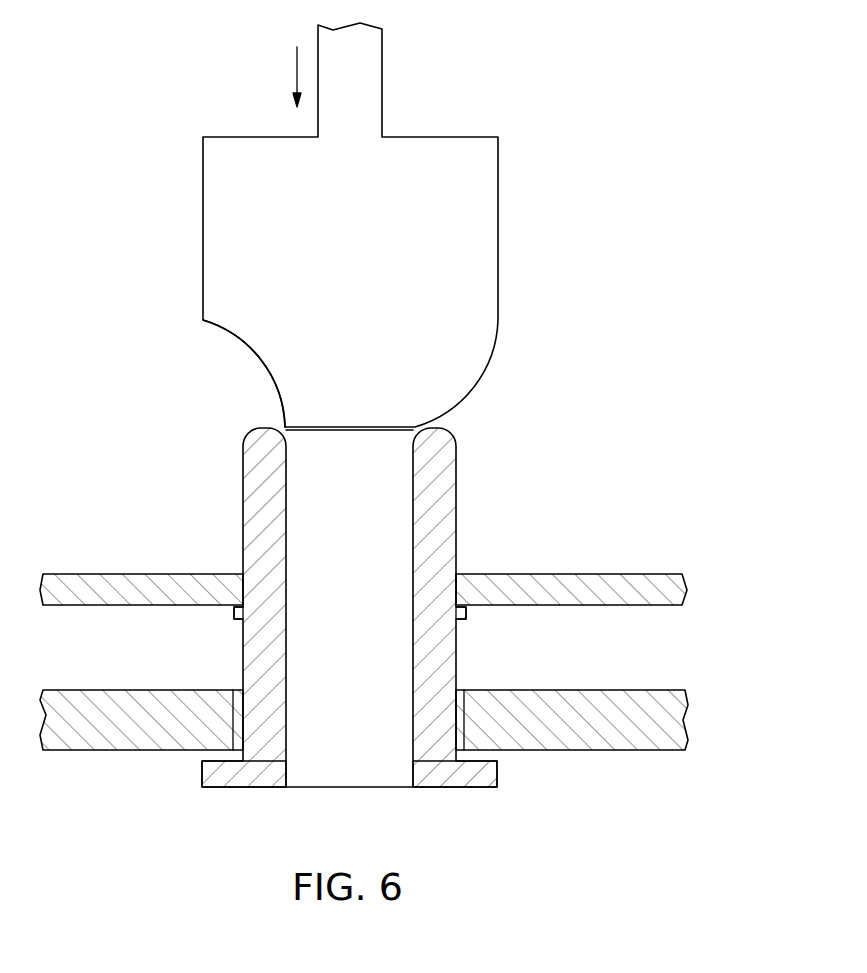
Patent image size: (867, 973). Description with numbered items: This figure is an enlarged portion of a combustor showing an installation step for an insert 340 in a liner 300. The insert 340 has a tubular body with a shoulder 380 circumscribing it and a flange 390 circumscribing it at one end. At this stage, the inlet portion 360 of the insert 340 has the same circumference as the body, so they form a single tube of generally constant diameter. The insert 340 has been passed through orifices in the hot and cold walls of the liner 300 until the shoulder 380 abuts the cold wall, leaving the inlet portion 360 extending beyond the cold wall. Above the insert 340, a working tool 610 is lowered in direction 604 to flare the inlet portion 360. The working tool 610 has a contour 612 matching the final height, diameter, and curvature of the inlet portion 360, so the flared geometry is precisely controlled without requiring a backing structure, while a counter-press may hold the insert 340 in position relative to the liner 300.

The direction 604 is at (297, 72).
The working tool 610 is at (498, 218).
The contour 612 is at (232, 332).
The insert 340 is at (498, 475).
The inlet portion 360 is at (243, 485).
The shoulder 380 is at (234, 610).
The flange 390 is at (240, 788).
The liner 300 is at (708, 563).